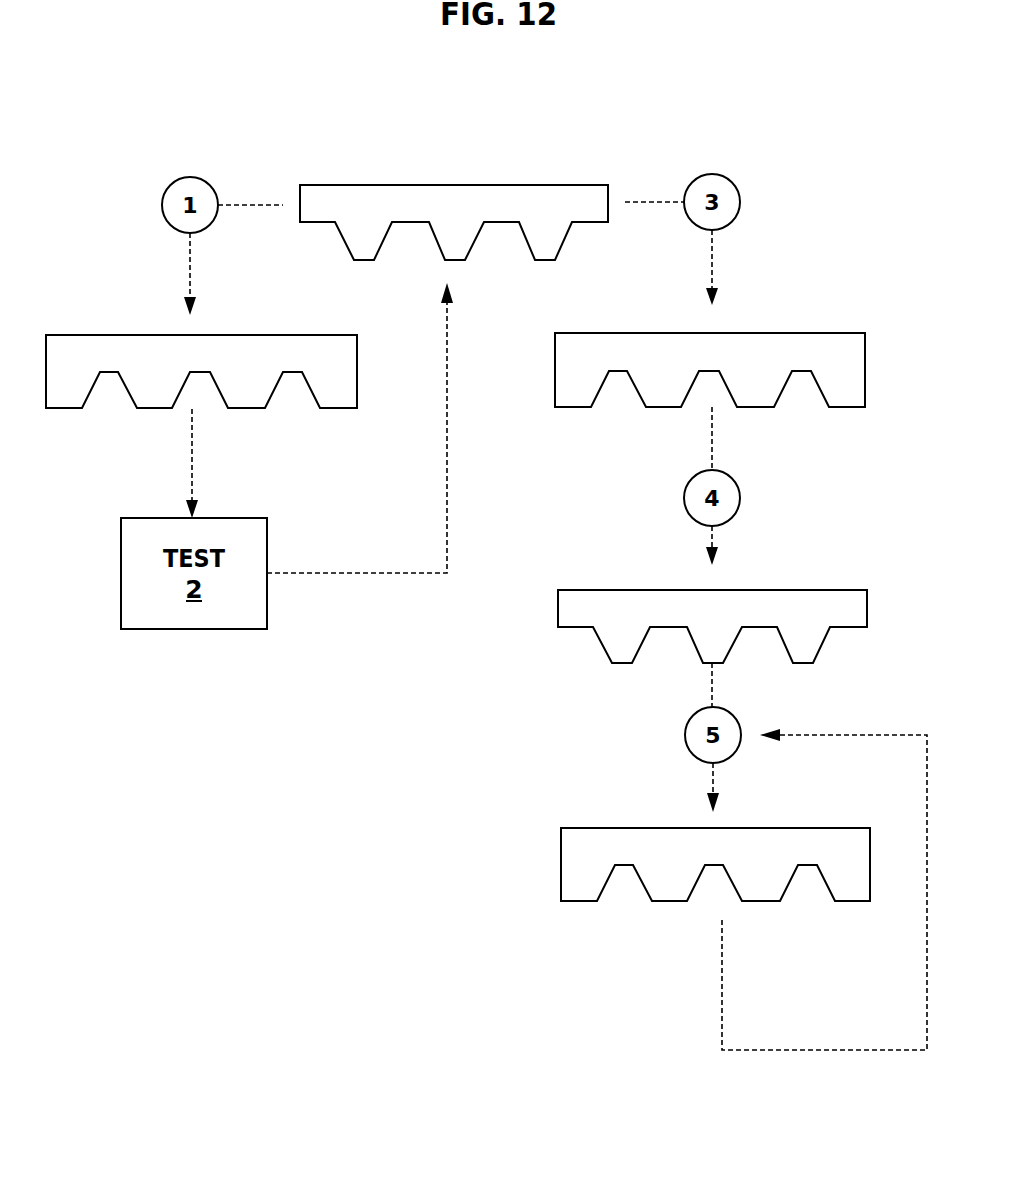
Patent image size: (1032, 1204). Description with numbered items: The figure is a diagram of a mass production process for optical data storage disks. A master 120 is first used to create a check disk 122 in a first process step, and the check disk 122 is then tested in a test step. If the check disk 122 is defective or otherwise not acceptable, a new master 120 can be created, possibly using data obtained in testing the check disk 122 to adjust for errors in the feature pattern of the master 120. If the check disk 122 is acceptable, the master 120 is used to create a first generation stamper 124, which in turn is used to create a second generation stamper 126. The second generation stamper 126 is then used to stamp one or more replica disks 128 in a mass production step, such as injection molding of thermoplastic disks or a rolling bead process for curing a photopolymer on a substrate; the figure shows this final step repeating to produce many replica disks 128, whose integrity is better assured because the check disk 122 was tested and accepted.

The master 120 is at (353, 200).
The check disk 122 is at (118, 348).
The first generation stamper 124 is at (790, 345).
The second generation stamper 126 is at (793, 603).
The replica disks 128 is at (615, 842).